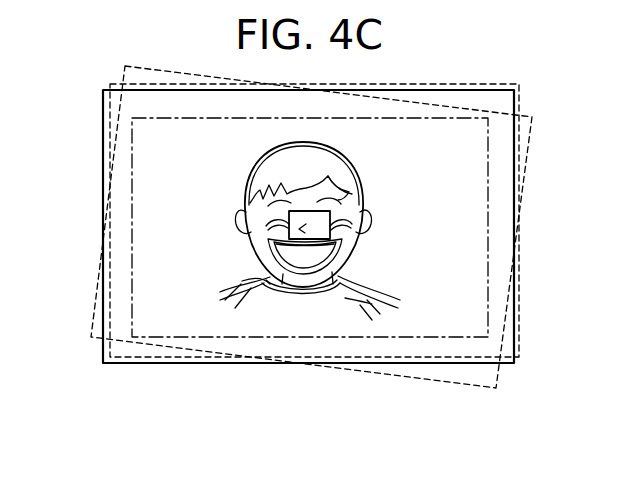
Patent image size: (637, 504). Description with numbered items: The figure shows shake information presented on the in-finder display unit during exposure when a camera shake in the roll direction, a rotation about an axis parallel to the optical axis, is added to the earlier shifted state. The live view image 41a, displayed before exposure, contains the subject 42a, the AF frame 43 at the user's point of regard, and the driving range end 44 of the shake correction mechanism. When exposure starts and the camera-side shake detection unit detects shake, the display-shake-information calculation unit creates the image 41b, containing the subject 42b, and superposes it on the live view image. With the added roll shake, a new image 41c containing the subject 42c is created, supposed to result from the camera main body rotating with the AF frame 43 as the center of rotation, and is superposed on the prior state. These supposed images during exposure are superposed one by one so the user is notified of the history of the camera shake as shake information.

The live view image 41a is at (110, 364).
The image created by the display-shake-information calculation unit 41b is at (213, 358).
The image created according to roll-direction camera shake 41c is at (97, 288).
The subject 42a is at (345, 298).
The subject in image 41b 42b is at (345, 298).
The subject in image 41c 42c is at (242, 281).
The AF frame 43 is at (330, 236).
The driving range end of the shake correction mechanism 44 is at (387, 119).